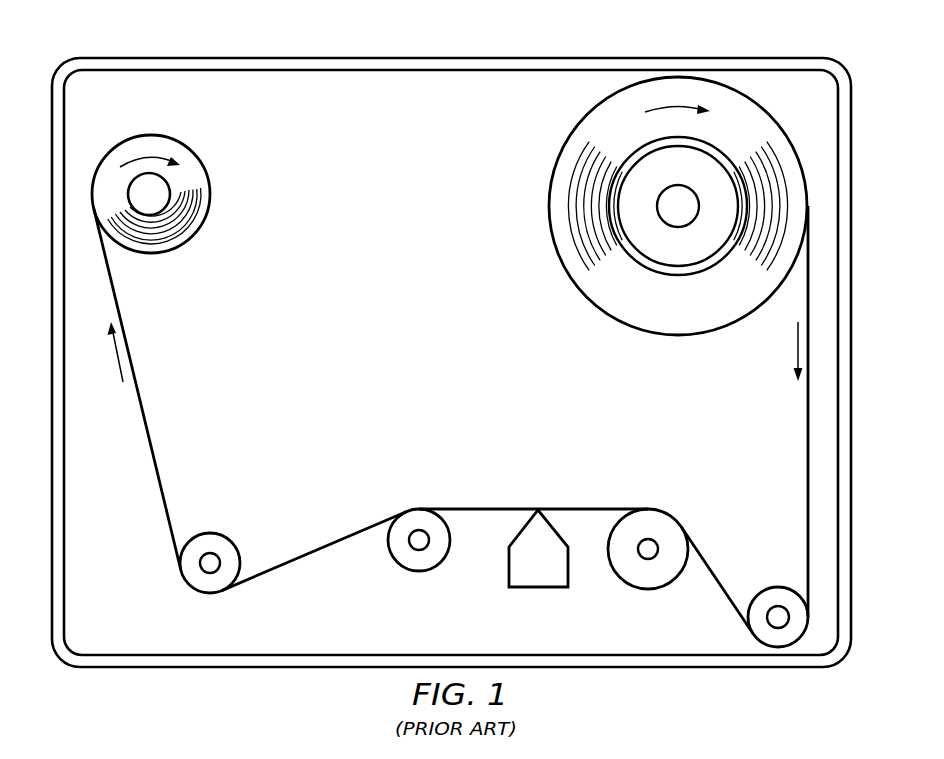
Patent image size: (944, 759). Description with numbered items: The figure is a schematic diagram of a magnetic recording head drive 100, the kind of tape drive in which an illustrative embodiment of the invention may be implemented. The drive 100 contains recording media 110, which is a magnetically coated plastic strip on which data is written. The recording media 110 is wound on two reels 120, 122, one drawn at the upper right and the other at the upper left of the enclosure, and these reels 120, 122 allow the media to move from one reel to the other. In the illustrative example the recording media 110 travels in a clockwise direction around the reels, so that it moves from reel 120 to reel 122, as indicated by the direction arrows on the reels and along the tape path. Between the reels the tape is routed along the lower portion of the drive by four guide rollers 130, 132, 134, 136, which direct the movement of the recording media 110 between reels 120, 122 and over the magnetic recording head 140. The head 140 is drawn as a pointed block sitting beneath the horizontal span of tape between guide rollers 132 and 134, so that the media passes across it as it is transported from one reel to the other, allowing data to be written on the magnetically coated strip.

The magnetic recording head drive 100 is at (306, 56).
The recording media 110 is at (490, 507).
The reel 120 is at (678, 335).
The reel 122 is at (150, 136).
The guide roller 130 is at (778, 586).
The guide roller 132 is at (648, 590).
The guide roller 134 is at (418, 571).
The guide roller 136 is at (211, 534).
The magnetic recording head 140 is at (538, 588).